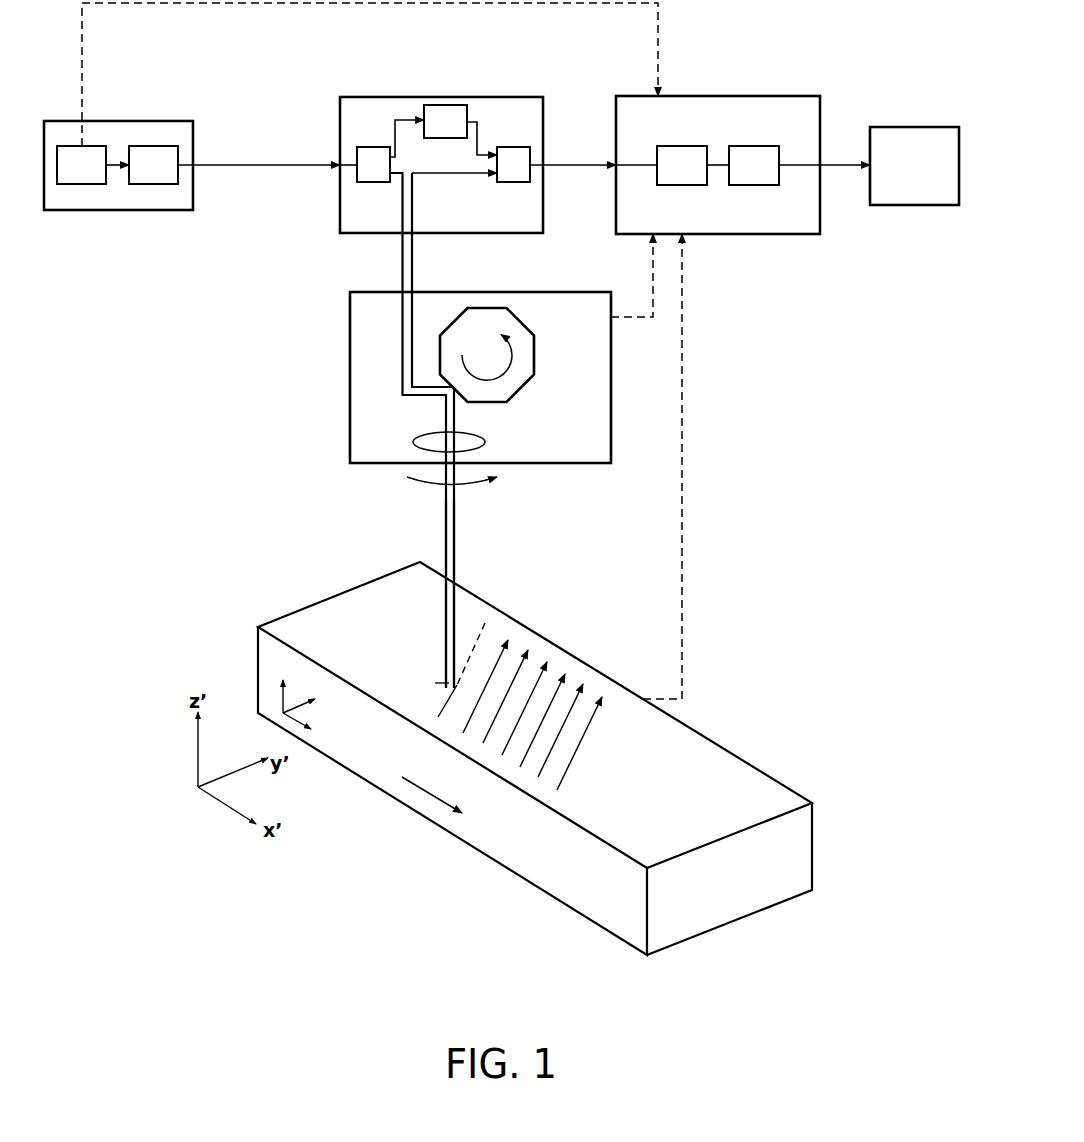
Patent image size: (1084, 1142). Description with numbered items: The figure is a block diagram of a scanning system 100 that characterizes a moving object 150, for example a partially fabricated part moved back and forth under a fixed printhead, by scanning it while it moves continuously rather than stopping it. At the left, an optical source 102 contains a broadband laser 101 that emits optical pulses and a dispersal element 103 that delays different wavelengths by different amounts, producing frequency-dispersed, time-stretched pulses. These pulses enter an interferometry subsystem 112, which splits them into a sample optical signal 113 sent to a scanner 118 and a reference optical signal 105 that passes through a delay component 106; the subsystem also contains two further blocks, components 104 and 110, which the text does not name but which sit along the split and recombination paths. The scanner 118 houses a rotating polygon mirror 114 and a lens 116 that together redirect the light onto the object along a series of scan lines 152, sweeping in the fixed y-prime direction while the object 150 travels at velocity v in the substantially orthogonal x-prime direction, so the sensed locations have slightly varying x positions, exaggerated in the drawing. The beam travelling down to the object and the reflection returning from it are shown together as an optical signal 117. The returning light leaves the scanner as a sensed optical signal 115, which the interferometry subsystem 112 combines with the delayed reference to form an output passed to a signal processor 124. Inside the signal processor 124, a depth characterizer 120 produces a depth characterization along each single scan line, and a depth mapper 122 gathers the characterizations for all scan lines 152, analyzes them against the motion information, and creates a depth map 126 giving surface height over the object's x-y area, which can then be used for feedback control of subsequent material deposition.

The scanning system 100 is at (227, 400).
The broadband laser 101 is at (82, 184).
The optical source 102 is at (118, 121).
The dispersal element 103 is at (152, 184).
The beam splitter 104 is at (372, 182).
The reference optical signal 105 is at (400, 118).
The delay component 106 is at (445, 105).
The beam combiner 110 is at (514, 147).
The interferometry subsystem 112 is at (356, 97).
The sample optical signal 113 is at (402, 255).
The rotating polygon mirror 114 is at (535, 353).
The sensed optical signal 115 is at (413, 256).
The lens 116 is at (486, 442).
The optical signal 117 is at (468, 541).
The scanner 118 is at (557, 292).
The depth characterizer 120 is at (683, 146).
The depth mapper 122 is at (755, 146).
The signal processor 124 is at (718, 96).
The depth map 126 is at (915, 127).
The moving object 150 is at (802, 856).
The scan lines 152 is at (518, 667).